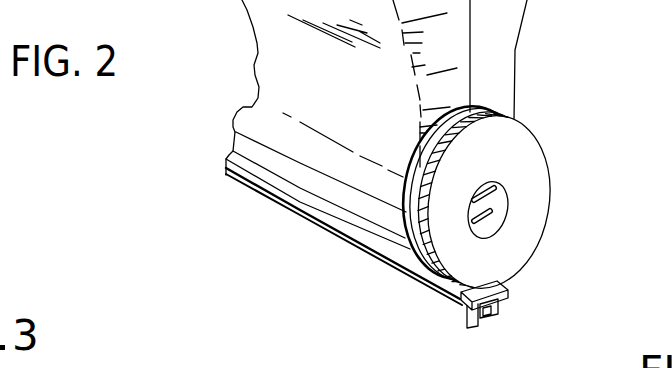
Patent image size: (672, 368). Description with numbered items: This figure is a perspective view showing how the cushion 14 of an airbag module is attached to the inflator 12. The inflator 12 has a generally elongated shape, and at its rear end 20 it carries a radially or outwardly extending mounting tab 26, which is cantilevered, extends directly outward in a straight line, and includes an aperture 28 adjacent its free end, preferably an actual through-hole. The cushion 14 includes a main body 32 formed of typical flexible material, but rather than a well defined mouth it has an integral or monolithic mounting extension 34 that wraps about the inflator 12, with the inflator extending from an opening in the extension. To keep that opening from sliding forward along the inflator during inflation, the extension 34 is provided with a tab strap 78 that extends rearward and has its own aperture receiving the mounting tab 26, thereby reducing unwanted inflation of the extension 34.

The main body 32 is at (240, 1).
The mounting extension 34 is at (270, 137).
The cushion 14 is at (340, 200).
The inflator 12 is at (403, 250).
The rear end 20 is at (537, 162).
The tab strap 78 is at (502, 282).
The mounting tab 26 is at (465, 315).
The aperture 28 is at (487, 316).